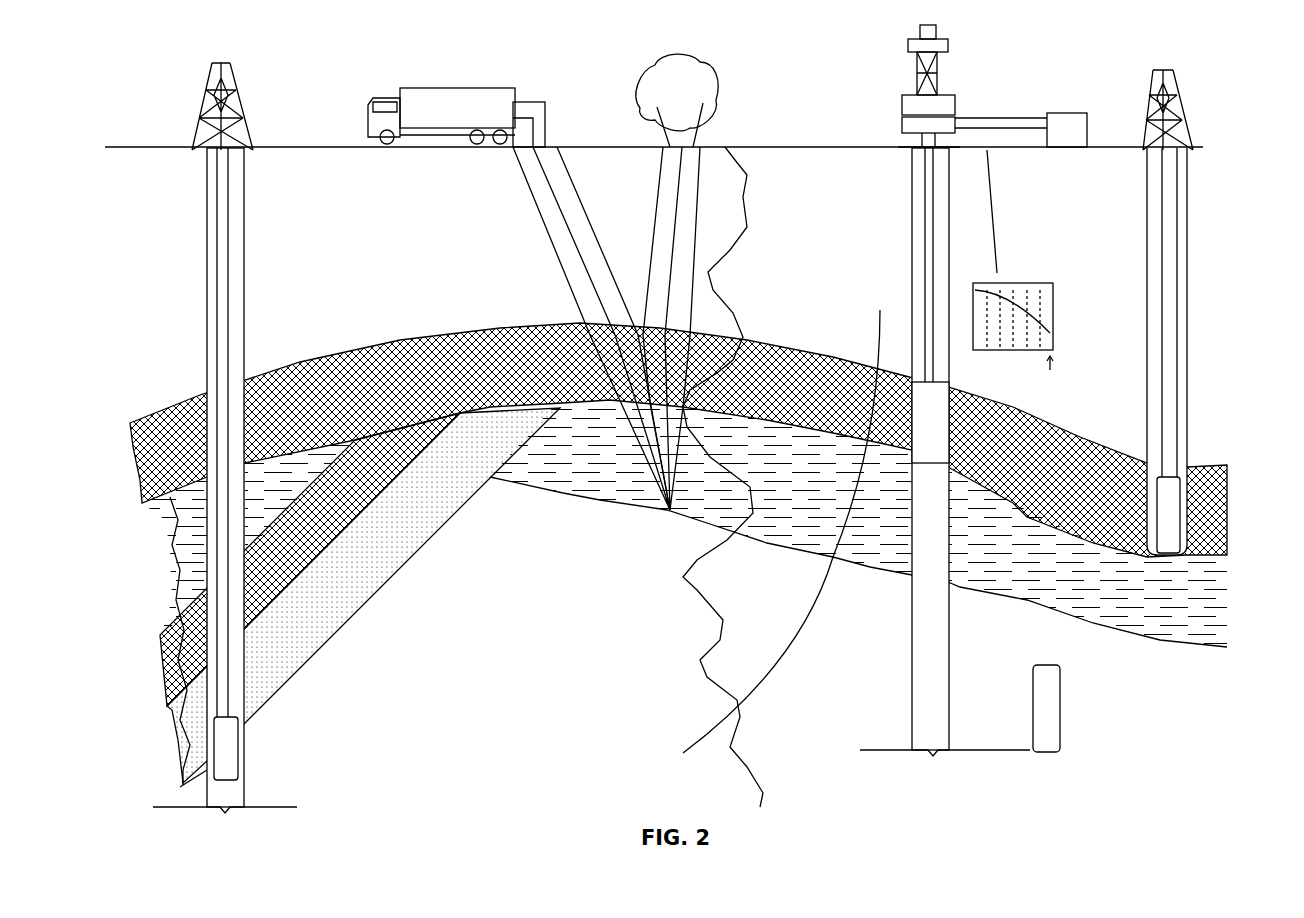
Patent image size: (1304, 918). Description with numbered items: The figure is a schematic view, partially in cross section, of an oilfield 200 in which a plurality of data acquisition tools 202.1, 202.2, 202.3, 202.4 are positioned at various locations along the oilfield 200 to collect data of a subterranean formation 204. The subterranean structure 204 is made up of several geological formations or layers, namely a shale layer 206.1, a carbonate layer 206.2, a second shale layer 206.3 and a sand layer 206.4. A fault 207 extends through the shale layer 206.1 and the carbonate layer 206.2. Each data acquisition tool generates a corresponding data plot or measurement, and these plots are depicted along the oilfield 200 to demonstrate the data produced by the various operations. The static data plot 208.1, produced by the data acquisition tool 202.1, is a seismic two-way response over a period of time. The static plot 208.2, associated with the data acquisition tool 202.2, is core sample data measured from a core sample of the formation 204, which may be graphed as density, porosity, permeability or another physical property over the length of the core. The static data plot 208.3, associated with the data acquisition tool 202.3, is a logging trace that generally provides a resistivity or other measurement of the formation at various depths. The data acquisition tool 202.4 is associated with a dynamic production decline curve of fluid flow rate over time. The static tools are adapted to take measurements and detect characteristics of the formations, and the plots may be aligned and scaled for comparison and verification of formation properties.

The oilfield 200 is at (1128, 78).
The data acquisition tool 202.1 is at (430, 88).
The data acquisition tool 202.2 is at (1188, 518).
The data acquisition tool 202.3 is at (238, 752).
The data acquisition tool 202.4 is at (951, 440).
The subterranean formation 204 is at (531, 586).
The shale layer 206.1 is at (678, 440).
The carbonate layer 206.2 is at (684, 523).
The shale layer 206.3 is at (310, 559).
The sand layer 206.4 is at (1043, 393).
The fault 207 is at (881, 320).
The static data plot 208.1 is at (717, 640).
The static data plot 208.2 is at (1027, 738).
The static data plot 208.3 is at (172, 554).